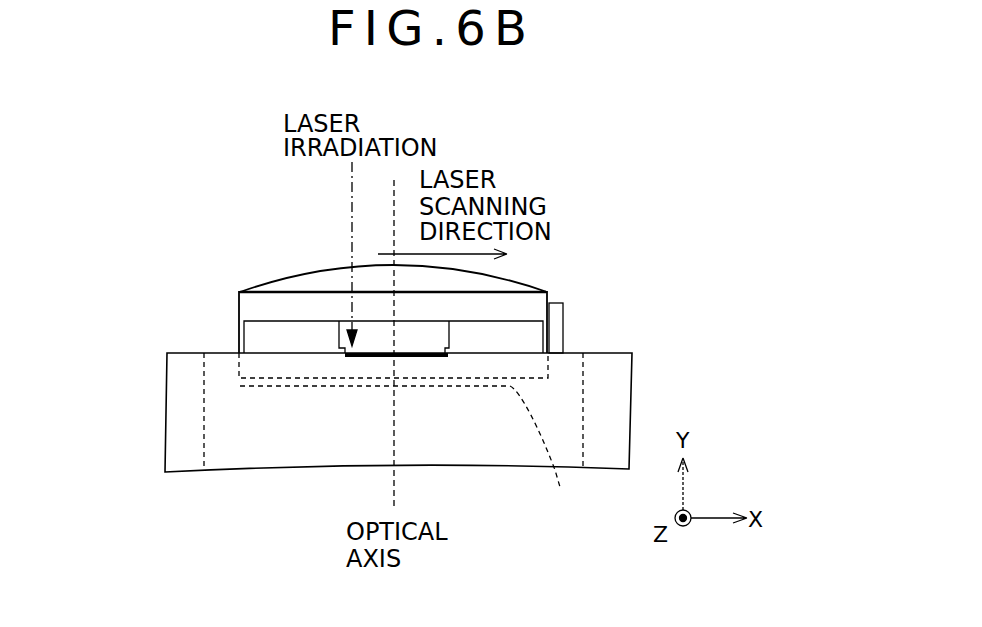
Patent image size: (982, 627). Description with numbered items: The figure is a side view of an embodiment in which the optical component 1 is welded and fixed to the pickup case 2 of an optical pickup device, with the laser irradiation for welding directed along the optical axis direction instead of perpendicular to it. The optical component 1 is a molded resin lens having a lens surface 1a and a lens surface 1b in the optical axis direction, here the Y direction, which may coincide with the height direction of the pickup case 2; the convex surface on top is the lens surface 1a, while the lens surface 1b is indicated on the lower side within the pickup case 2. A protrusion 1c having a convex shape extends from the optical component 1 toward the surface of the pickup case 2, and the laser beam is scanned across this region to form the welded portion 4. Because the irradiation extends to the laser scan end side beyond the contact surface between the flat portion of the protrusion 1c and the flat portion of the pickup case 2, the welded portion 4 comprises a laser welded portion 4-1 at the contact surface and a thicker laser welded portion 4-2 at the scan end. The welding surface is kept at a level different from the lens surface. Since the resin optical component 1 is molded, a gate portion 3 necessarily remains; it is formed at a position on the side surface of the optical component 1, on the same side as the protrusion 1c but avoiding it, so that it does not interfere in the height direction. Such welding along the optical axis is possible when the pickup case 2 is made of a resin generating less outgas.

The optical component 1 is at (229, 311).
The lens surface 1a is at (510, 278).
The lens surface 1b is at (410, 453).
The protrusion 1c is at (344, 337).
The pickup case 2 is at (188, 406).
The gate portion 3 is at (563, 323).
The welded portion 4 is at (397, 433).
The laser welded portion of the contact surface 4-1 is at (388, 358).
The thicker laser welded portion 4-2 is at (447, 354).